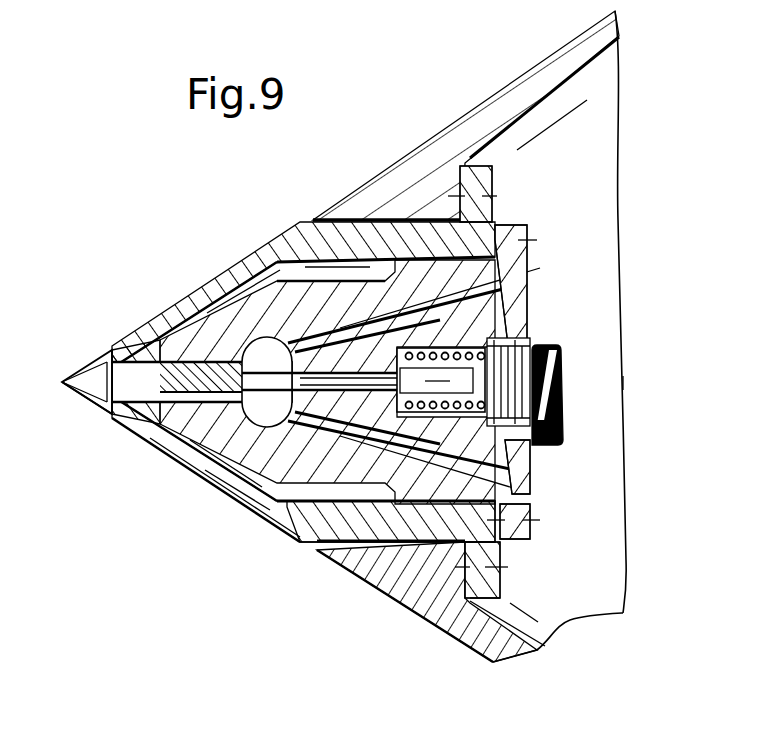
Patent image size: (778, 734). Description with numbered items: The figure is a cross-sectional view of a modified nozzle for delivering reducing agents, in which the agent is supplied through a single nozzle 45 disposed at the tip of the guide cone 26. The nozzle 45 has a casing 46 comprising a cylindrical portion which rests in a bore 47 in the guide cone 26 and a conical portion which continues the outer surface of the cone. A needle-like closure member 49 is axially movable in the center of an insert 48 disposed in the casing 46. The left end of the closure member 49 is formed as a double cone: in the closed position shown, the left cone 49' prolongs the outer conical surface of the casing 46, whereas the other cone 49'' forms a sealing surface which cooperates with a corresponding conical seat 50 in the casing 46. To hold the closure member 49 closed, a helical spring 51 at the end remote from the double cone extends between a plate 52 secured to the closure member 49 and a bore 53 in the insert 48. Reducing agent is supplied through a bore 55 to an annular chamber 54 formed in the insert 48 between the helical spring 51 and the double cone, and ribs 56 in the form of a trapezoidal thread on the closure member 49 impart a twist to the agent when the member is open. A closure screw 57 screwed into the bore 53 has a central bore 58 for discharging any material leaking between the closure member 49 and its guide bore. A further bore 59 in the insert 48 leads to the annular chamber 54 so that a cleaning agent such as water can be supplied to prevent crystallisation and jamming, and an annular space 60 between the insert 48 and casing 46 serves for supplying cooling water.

The guide cone 26 is at (462, 120).
The nozzle 45 is at (203, 283).
The casing 46 is at (302, 535).
The bore 47 is at (393, 580).
The insert 48 is at (290, 250).
The closure member 49 is at (75, 355).
The left cone 49' is at (74, 423).
The other cone 49'' is at (111, 415).
The conical seat 50 is at (119, 340).
The helical spring 51 is at (507, 444).
The plate 52 is at (536, 343).
The bore 53 is at (528, 320).
The annular chamber 54 is at (213, 477).
The bore 55 is at (526, 280).
The ribs 56 is at (196, 450).
The closure screw 57 is at (563, 428).
The central bore 58 is at (563, 383).
The bore 59 is at (503, 464).
The annular space 60 is at (253, 508).